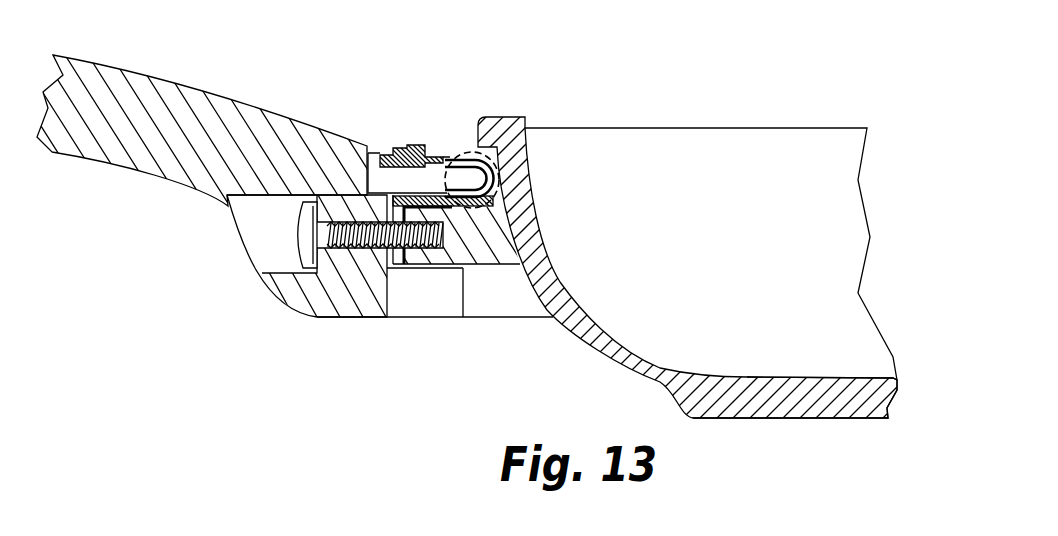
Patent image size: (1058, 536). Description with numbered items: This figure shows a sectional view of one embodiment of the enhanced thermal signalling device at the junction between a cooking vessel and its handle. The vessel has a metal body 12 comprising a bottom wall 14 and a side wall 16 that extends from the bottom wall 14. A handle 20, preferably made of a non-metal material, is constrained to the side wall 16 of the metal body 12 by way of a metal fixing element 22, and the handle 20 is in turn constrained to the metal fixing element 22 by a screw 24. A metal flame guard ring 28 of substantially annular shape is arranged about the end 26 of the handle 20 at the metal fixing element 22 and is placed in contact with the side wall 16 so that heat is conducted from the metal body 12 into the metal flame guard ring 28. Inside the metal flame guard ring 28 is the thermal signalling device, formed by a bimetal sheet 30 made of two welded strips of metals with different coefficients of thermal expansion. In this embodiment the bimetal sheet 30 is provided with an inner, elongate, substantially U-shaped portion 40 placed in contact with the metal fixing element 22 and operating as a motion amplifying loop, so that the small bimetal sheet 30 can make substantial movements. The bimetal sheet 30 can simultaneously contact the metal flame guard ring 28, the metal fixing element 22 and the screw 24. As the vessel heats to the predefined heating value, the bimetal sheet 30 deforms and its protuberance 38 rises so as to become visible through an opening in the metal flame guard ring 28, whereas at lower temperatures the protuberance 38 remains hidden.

The metal body 12 is at (748, 120).
The bottom wall 14 is at (852, 410).
The side wall 16 is at (522, 177).
The handle 20 is at (167, 88).
The metal fixing element 22 is at (489, 252).
The screw 24 is at (309, 242).
The end of the handle 26 is at (352, 298).
The metal flame guard ring 28 is at (428, 317).
The bimetal sheet 30 is at (449, 148).
The protuberance 38 is at (410, 147).
The inner U-shaped portion 40 is at (489, 204).